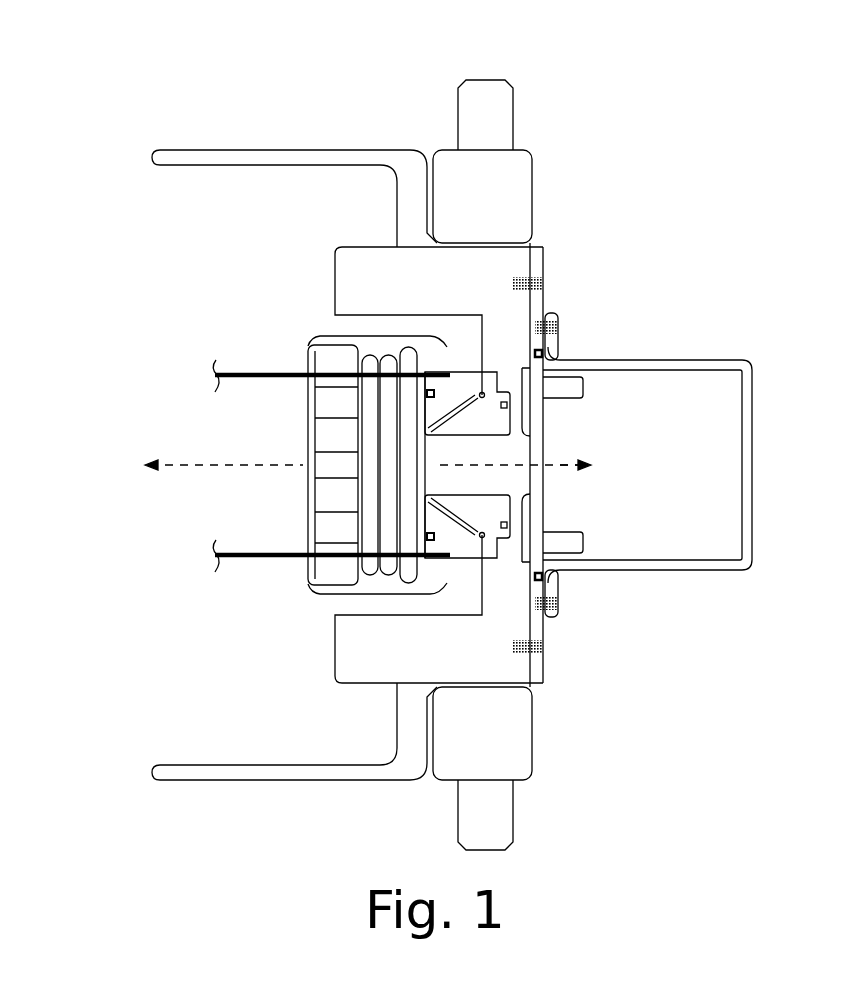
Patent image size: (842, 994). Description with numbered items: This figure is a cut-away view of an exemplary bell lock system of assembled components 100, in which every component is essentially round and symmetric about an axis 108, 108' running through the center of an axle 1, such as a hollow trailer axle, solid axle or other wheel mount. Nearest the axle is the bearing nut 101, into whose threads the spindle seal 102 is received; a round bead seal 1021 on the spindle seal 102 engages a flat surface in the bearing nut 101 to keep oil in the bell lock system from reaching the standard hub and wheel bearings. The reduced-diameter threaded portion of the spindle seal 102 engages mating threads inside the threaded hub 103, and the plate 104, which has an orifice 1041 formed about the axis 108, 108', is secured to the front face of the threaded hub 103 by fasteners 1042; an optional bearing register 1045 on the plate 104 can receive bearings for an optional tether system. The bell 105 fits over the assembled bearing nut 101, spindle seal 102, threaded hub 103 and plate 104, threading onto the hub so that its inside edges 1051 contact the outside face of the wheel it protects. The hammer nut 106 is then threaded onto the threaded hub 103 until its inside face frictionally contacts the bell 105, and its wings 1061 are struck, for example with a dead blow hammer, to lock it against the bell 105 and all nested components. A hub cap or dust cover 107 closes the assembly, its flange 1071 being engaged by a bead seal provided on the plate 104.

The bell lock system of assembled components 100 is at (457, 40).
The axle 1 is at (272, 375).
The bearing nut 101 is at (373, 334).
The spindle seal 102 is at (497, 432).
The seal 1021 is at (430, 393).
The threaded hub 103 is at (432, 295).
The plate 104 is at (541, 312).
The orifice 1041 is at (543, 355).
The fasteners 1042 is at (541, 284).
The bearing register 1045 is at (555, 410).
The bell 105 is at (245, 150).
The inside edges 1051 is at (160, 156).
The hammer nut 106 is at (502, 212).
The wings 1061 is at (518, 119).
The hub cap (dust cover) 107 is at (752, 363).
The bracket fixing portion 1071 is at (556, 332).
The axis 108 is at (339, 466).
The axis 108' is at (604, 466).